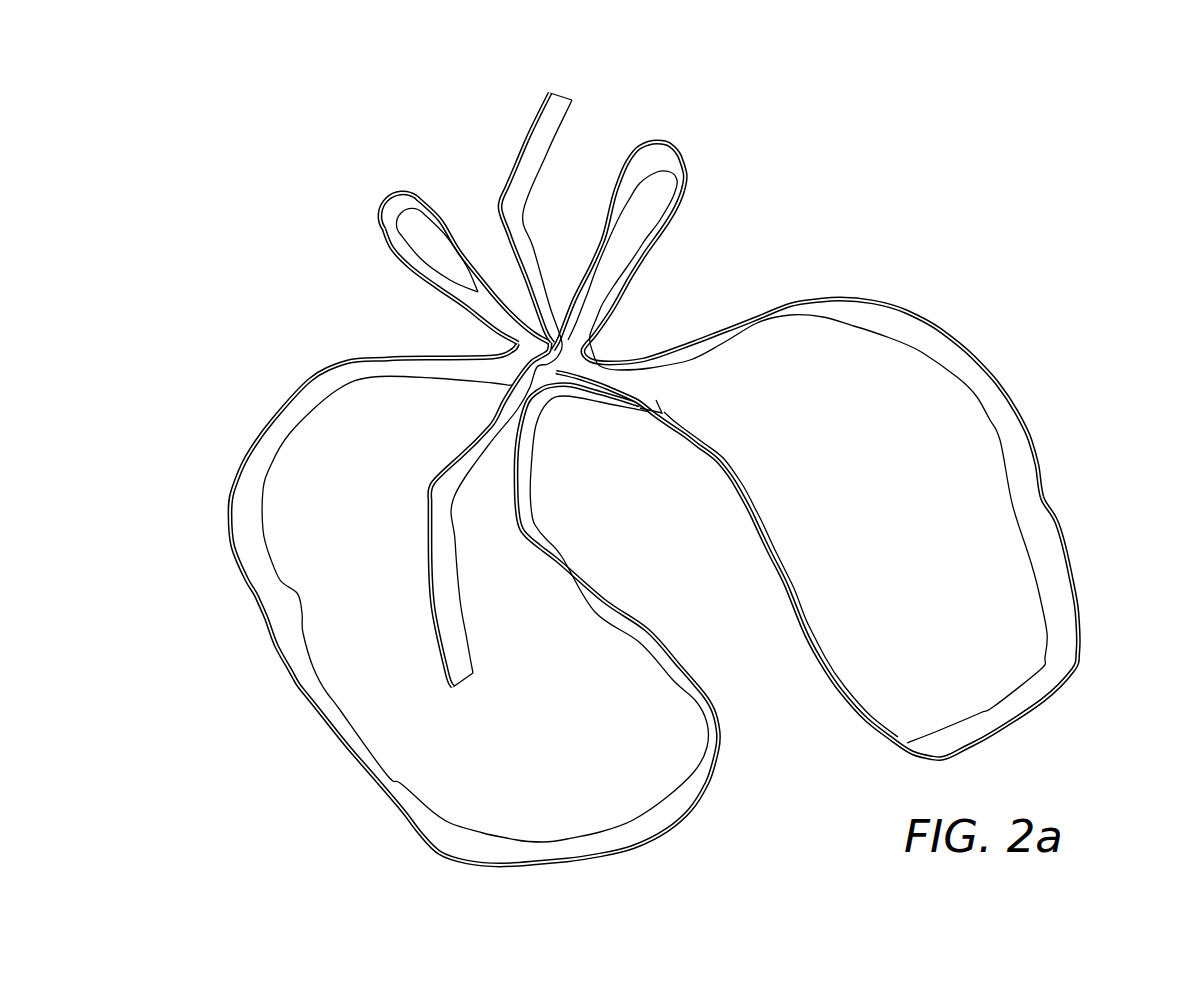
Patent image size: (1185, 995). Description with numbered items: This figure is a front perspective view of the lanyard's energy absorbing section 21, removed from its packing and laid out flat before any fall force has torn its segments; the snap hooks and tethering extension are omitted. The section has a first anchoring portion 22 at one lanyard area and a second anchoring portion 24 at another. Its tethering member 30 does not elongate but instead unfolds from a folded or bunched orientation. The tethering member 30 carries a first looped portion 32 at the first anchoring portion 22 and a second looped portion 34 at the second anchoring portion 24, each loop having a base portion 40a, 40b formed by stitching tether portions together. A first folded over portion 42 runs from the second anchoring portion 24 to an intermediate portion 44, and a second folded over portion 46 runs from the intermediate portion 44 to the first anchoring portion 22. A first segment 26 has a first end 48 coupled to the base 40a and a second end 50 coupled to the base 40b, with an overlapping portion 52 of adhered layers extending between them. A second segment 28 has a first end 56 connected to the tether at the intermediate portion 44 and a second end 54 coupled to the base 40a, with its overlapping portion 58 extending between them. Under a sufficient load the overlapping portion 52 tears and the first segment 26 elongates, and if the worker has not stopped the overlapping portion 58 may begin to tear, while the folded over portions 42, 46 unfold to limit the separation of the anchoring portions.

The energy absorbing section 21 is at (682, 468).
The first anchoring portion 22 is at (429, 219).
The second anchoring portion 24 is at (658, 249).
The first segment 26 is at (584, 207).
The second segment 28 is at (444, 515).
The tethering member 30 is at (859, 529).
The first looped portion 32 is at (410, 190).
The second looped portion 34 is at (696, 162).
The base portion of first loop 40a is at (500, 327).
The base portion of second loop 40b is at (604, 294).
The first folded over portion 42 is at (1070, 630).
The intermediate portion 44 is at (590, 405).
The second folded over portion 46 is at (460, 604).
The first end of first segment 48 is at (475, 287).
The second end of first segment 50 is at (600, 263).
The overlapping portion of first segment 52 is at (558, 95).
The second end of second segment 54 is at (505, 381).
The first end of second segment 56 is at (630, 394).
The overlapping portion of second segment 58 is at (431, 570).